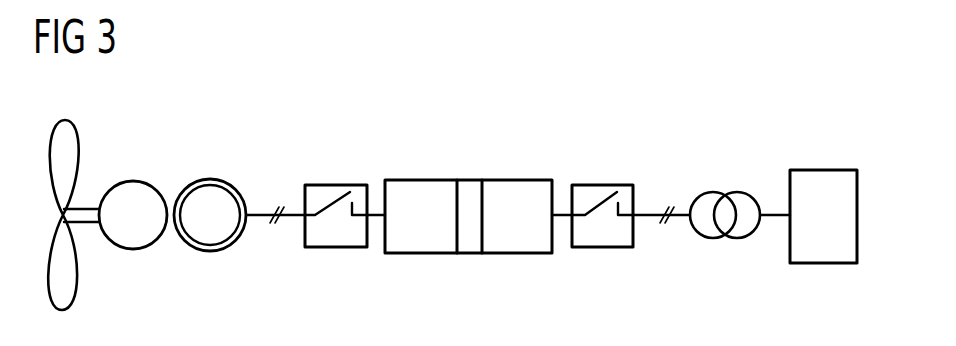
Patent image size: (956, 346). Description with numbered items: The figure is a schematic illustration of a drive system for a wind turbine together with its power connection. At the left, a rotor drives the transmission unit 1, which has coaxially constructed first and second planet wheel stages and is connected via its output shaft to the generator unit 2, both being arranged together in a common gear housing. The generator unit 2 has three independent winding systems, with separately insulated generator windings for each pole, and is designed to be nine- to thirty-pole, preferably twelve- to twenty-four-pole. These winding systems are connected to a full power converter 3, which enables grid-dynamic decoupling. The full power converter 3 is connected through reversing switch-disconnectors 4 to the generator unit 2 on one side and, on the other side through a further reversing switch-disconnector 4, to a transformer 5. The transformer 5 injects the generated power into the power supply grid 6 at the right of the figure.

The transmission unit 1 is at (133, 180).
The generator unit 2 is at (210, 178).
The full power converter 3 is at (468, 180).
The reversing switch-disconnectors 4 is at (337, 185).
The transformer 5 is at (712, 192).
The power supply grid 6 is at (824, 170).